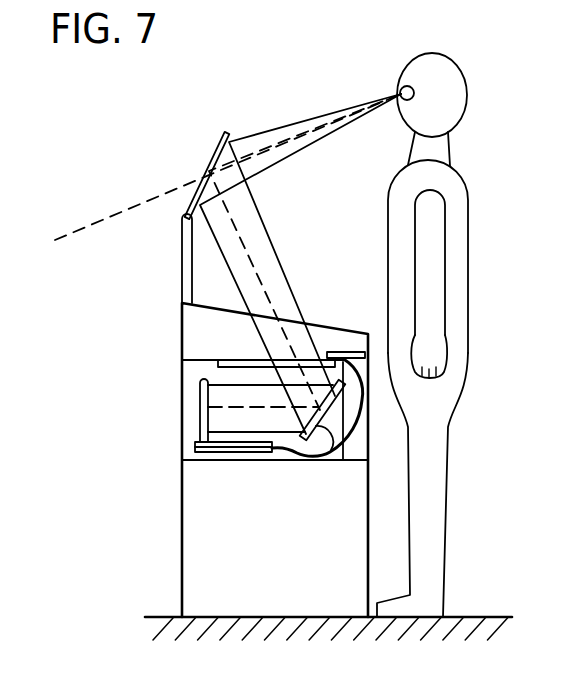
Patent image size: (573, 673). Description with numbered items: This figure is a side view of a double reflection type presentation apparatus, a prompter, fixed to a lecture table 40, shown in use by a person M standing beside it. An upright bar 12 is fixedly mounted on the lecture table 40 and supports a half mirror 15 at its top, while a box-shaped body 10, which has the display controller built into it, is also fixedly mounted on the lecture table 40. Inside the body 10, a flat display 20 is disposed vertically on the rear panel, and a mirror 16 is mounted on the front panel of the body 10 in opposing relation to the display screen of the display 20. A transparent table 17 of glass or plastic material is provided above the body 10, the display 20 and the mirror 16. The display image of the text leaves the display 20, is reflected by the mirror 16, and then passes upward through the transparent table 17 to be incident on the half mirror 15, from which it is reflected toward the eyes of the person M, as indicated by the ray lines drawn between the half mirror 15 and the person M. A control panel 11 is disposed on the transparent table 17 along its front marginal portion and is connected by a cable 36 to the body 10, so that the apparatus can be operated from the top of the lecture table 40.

The box-shaped body 10 is at (232, 458).
The control panel 11 is at (347, 351).
The upright bar 12 is at (182, 283).
The half mirror 15 is at (222, 140).
The mirror 16 is at (332, 456).
The transparent table 17 is at (237, 359).
The flat display 20 is at (200, 416).
The cable 36 is at (287, 457).
The lecture table 40 is at (192, 489).
The viewer M is at (468, 215).